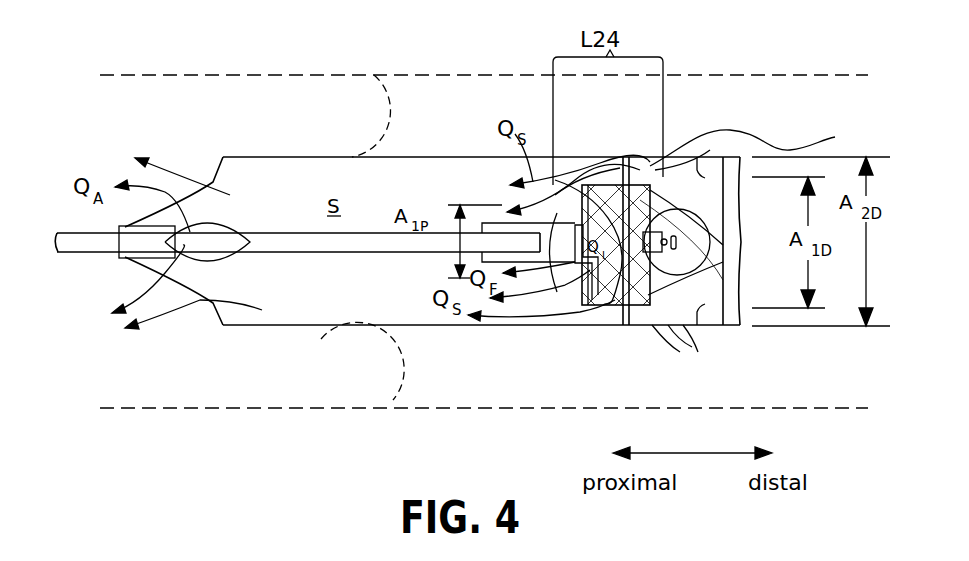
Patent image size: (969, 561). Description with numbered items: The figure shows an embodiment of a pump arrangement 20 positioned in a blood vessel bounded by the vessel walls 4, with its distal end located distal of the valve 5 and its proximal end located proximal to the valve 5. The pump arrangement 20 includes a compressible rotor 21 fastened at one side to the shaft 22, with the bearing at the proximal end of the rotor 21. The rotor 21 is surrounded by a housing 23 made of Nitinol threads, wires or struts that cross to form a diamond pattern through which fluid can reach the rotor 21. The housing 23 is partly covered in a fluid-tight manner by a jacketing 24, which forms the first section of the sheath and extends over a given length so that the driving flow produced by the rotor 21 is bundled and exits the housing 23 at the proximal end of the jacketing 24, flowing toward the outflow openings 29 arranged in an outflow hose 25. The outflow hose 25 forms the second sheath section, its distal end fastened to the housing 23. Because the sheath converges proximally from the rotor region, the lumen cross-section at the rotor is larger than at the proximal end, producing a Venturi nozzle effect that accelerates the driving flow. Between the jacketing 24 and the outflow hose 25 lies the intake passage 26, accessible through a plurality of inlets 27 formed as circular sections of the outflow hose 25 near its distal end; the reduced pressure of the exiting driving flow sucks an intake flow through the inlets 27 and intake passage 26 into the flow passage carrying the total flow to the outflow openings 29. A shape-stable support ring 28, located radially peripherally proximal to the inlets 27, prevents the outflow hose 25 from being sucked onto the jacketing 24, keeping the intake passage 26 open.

The vessel walls 4 is at (347, 75).
The valve 5 is at (395, 110).
The pump arrangement 20 is at (290, 140).
The compressible rotor 21 is at (575, 265).
The shaft 22 is at (403, 245).
The housing 23 is at (730, 222).
The jacketing 24 is at (593, 320).
The outflow hose 25 is at (208, 178).
The intake passage 26 is at (624, 327).
The inlets 27 is at (698, 163).
The support ring 28 is at (623, 165).
The outflow openings 29 is at (167, 243).